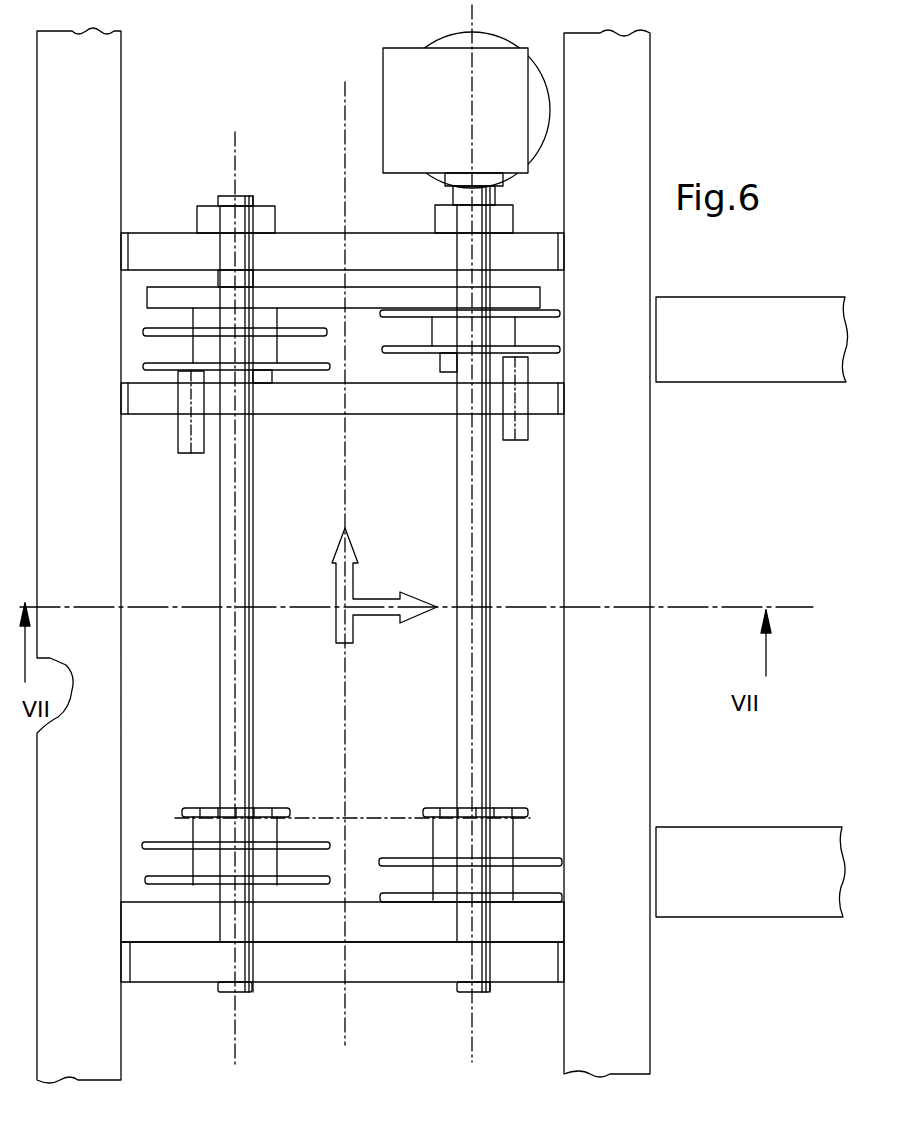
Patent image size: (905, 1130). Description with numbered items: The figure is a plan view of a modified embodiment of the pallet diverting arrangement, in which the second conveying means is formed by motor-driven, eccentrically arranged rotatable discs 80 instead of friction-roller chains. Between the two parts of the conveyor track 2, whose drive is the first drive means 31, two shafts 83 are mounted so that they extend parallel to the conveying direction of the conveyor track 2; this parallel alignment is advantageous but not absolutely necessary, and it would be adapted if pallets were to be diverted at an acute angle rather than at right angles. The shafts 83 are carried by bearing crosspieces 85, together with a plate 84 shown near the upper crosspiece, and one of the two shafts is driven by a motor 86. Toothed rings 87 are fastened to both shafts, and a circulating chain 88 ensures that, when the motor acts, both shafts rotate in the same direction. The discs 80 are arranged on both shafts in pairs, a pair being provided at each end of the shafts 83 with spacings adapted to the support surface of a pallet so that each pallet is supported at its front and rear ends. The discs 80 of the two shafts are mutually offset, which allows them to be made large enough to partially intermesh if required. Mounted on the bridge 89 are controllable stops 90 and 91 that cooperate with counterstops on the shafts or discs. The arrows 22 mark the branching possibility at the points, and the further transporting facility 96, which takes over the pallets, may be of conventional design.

The conveyor track 2 is at (644, 1040).
The arrows 22 is at (352, 567).
The first drive means 31 is at (122, 83).
The discs 80 is at (545, 309).
The shafts 83 is at (222, 553).
The plate 84 is at (160, 297).
The bearing crosspieces 85 is at (302, 250).
The motor 86 is at (418, 58).
The toothed rings 87 is at (265, 810).
The circulating chain 88 is at (330, 810).
The bridge 89 is at (420, 403).
The controllable stop 90 is at (185, 444).
The controllable stop 91 is at (524, 441).
The further transporting facility 96 is at (738, 297).